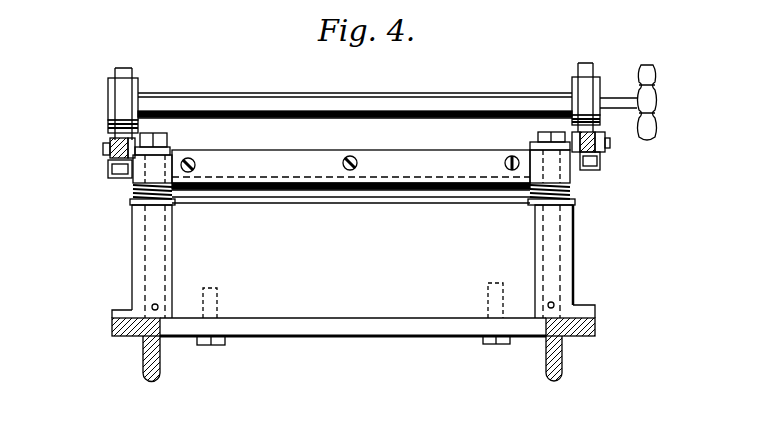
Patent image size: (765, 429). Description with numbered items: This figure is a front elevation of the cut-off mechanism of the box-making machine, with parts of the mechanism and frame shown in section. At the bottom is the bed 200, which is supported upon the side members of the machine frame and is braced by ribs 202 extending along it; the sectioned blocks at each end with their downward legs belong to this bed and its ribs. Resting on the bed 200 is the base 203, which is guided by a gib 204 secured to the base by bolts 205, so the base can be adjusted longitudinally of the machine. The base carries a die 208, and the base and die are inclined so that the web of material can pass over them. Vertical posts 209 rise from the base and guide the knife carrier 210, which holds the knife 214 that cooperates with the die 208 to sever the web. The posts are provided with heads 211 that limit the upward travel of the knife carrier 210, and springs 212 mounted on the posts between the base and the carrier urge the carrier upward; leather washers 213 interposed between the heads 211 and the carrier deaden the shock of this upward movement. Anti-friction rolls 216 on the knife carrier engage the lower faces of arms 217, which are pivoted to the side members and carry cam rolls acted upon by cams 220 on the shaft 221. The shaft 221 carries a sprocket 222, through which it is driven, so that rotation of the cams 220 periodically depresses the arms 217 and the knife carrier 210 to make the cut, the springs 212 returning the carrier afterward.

The bed 200 is at (111, 332).
The ribs 202 is at (160, 381).
The base 203 is at (352, 261).
The gib 204 is at (391, 337).
The bolts 205 is at (216, 346).
The die 208 is at (386, 204).
The vertical posts 209 is at (133, 189).
The knife carrier 210 is at (432, 145).
The heads 211 is at (168, 137).
The springs 212 is at (133, 201).
The leather washers 213 is at (197, 163).
The knife 214 is at (307, 177).
The anti-friction rolls 216 is at (108, 169).
The arms 217 is at (104, 146).
The cams 220 is at (133, 73).
The shaft 221 is at (452, 90).
The sprocket 222 is at (658, 89).